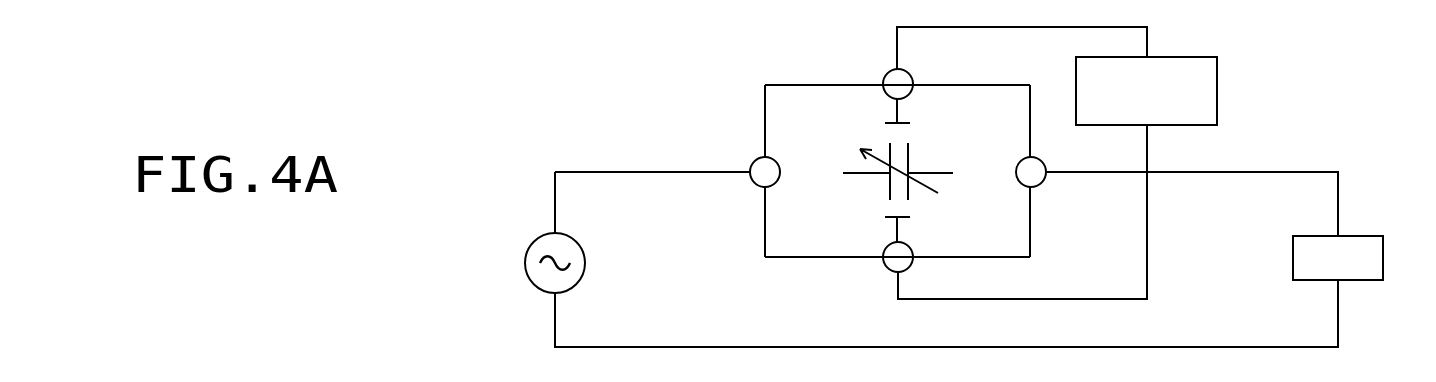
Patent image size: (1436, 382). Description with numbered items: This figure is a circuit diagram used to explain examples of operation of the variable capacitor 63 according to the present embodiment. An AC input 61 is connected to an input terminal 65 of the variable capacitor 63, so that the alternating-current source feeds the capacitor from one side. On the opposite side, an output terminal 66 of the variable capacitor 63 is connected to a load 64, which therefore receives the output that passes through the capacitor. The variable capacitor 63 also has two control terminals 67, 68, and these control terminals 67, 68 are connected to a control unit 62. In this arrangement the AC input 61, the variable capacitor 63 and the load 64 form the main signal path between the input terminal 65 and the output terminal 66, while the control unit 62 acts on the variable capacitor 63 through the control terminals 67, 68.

The AC input 61 is at (525, 263).
The control unit 62 is at (1218, 78).
The variable capacitor 63 is at (913, 163).
The load 64 is at (1361, 235).
The input terminal 65 is at (757, 160).
The output terminal 66 is at (1043, 183).
The control terminal 67 is at (886, 75).
The control terminal 68 is at (888, 272).